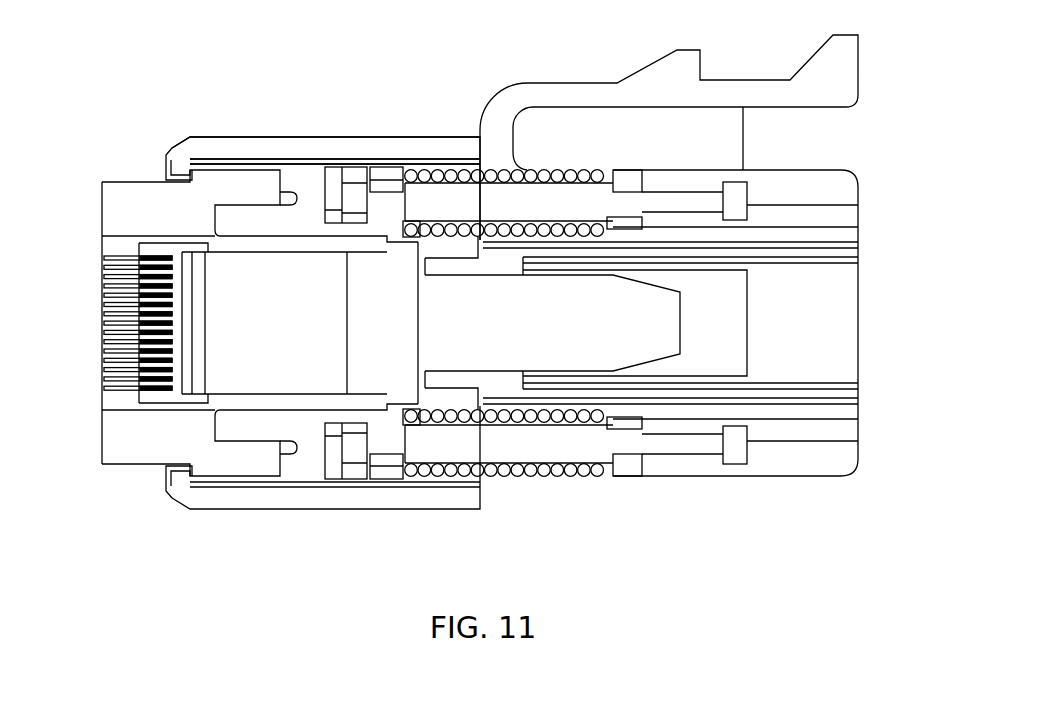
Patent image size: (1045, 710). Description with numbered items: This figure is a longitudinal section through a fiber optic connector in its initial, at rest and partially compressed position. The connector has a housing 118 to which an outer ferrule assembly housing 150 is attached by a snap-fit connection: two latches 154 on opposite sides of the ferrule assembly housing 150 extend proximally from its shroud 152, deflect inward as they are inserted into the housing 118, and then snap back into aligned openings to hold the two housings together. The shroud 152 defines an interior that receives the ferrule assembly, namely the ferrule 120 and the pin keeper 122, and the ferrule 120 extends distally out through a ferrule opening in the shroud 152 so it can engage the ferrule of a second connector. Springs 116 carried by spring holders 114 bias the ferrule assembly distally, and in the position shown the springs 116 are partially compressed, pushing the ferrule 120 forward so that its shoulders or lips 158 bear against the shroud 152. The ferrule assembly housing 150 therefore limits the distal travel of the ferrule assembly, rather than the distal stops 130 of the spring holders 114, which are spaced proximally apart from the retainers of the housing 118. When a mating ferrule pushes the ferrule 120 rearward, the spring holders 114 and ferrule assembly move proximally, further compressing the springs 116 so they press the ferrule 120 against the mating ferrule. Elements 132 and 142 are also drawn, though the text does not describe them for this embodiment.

The spring holder 114 is at (437, 174).
The spring 116 is at (495, 160).
The housing 118 is at (868, 212).
The ferrule 120 is at (98, 470).
The pin keeper 122 is at (298, 475).
The distal stop 130 is at (737, 200).
The retainer 132 is at (352, 200).
The clip 142 is at (372, 160).
The ferrule assembly housing 150 is at (195, 127).
The shroud 152 is at (250, 147).
The latch 154 is at (571, 330).
The lip 158 is at (172, 148).